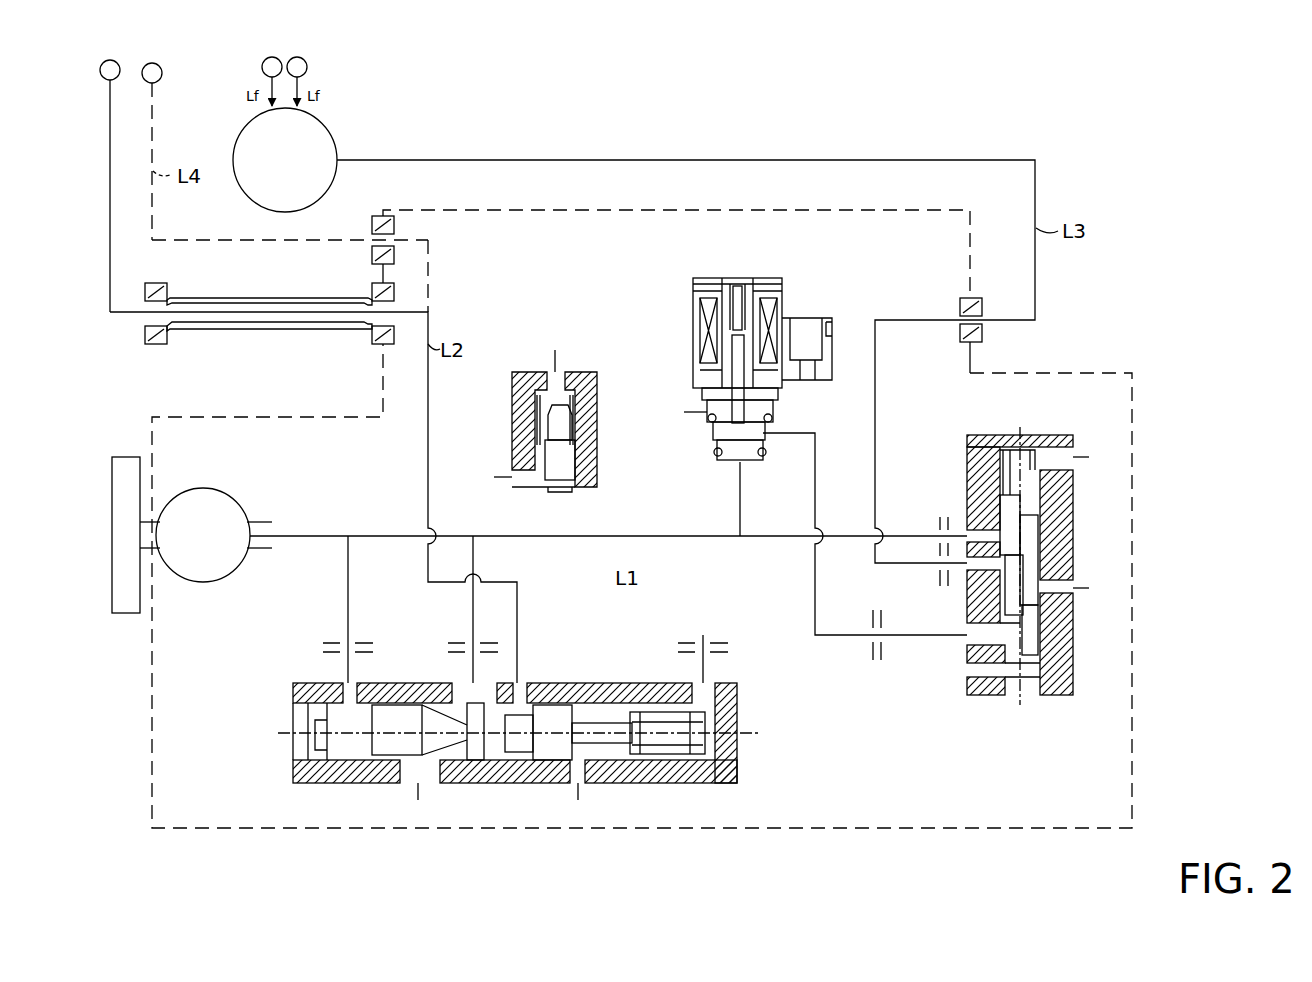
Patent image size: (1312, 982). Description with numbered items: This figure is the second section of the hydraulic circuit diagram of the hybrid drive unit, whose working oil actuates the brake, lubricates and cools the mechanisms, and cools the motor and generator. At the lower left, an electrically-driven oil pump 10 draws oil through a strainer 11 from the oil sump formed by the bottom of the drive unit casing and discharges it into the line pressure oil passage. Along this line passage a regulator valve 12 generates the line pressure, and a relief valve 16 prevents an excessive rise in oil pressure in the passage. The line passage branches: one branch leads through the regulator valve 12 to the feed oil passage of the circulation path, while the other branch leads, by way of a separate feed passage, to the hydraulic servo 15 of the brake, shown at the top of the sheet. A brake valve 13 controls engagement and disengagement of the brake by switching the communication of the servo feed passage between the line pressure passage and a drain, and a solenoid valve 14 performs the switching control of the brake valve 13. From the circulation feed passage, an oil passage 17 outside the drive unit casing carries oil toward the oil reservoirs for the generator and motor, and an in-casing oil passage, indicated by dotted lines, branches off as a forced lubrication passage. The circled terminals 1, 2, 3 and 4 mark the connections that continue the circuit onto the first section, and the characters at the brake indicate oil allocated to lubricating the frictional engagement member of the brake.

The port 1 is at (110, 186).
The port 2 is at (152, 151).
The port 3 is at (272, 81).
The port 4 is at (297, 81).
The oil pump 10 is at (227, 495).
The strainer 11 is at (124, 458).
The regulator valve 12 is at (758, 705).
The brake valve 13 is at (957, 436).
The solenoid valve 14 is at (756, 270).
The hydraulic servo 15 is at (323, 125).
The relief valve 16 is at (588, 356).
The oil passage 17 is at (279, 330).